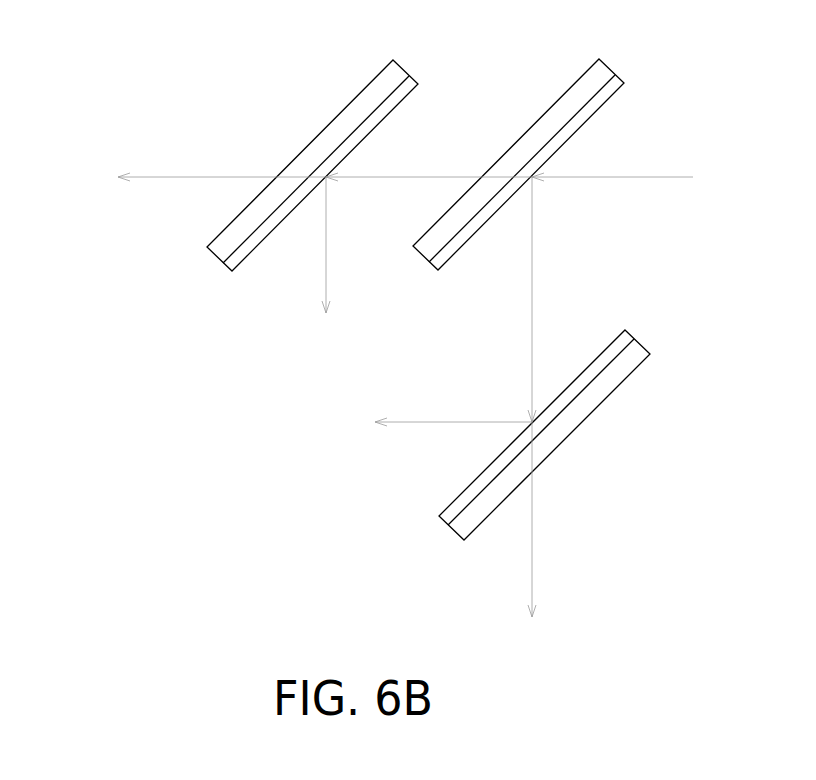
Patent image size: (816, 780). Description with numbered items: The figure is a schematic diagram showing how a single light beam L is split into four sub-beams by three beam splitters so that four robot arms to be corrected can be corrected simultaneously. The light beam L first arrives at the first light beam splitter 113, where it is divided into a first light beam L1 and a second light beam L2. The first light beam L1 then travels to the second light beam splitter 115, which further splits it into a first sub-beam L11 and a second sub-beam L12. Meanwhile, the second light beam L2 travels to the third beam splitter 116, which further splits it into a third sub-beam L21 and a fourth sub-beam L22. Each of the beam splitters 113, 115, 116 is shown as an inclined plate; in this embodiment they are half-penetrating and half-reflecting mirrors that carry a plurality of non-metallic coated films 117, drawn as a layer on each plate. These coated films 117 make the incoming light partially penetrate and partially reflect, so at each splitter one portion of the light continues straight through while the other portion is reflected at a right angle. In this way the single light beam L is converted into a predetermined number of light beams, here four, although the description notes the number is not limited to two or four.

The first light beam splitter 113 is at (598, 74).
The second light beam splitter 115 is at (393, 74).
The third beam splitter 116 is at (616, 372).
The non-metallic coated film 117 is at (380, 113).
The light beam L is at (621, 177).
The first light beam L1 is at (429, 159).
The second light beam L2 is at (548, 299).
The first sub-beam L11 is at (200, 179).
The second sub-beam L12 is at (327, 259).
The third sub-beam L21 is at (432, 424).
The fourth sub-beam L22 is at (532, 533).